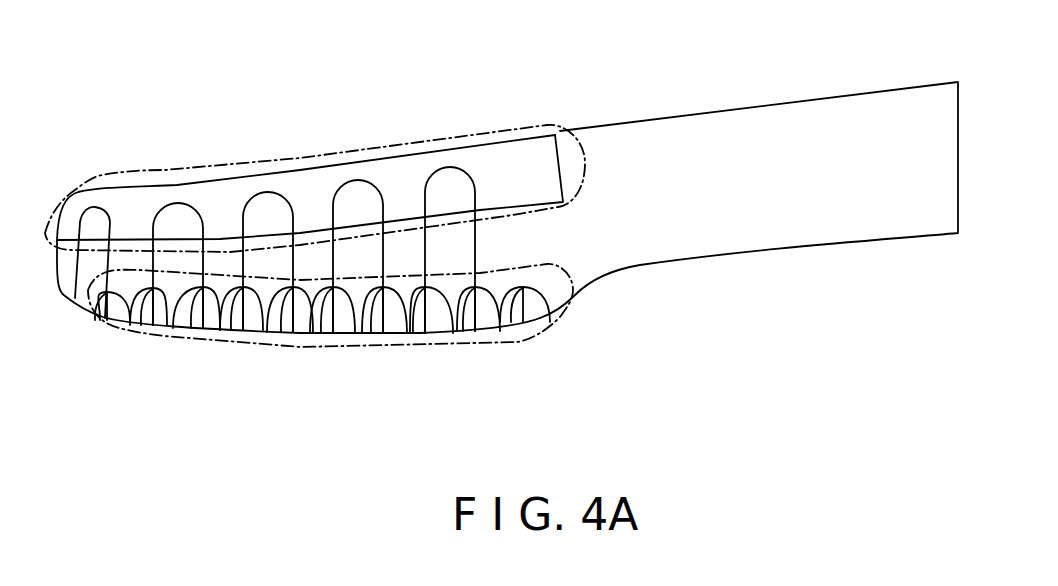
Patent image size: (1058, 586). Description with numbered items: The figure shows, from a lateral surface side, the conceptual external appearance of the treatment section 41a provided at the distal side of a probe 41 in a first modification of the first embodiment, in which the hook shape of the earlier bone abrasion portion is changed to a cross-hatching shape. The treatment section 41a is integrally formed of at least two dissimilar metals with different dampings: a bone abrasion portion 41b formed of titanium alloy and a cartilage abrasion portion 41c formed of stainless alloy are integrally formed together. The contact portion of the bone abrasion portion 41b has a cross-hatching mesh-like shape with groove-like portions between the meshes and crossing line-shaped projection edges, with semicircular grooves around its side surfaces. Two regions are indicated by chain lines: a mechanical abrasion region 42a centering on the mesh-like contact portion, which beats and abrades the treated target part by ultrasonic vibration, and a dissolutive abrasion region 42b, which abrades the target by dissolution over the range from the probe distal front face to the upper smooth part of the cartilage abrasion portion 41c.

The probe 41 is at (863, 95).
The treatment section 41a is at (391, 366).
The bone abrasion portion 41b is at (492, 337).
The cartilage abrasion portion 41c is at (452, 160).
The mechanical abrasion region 42a is at (303, 347).
The dissolutive abrasion region 42b is at (382, 142).